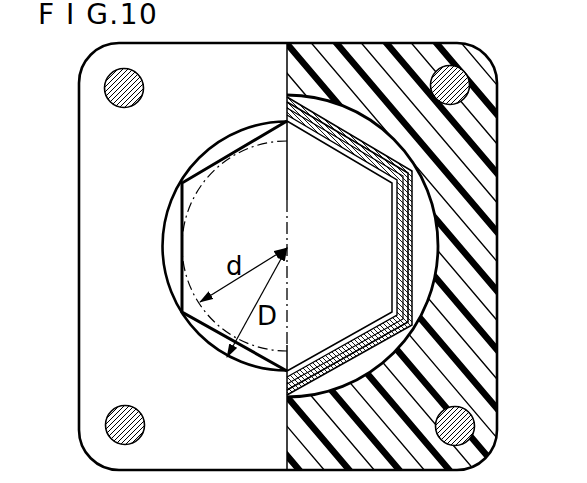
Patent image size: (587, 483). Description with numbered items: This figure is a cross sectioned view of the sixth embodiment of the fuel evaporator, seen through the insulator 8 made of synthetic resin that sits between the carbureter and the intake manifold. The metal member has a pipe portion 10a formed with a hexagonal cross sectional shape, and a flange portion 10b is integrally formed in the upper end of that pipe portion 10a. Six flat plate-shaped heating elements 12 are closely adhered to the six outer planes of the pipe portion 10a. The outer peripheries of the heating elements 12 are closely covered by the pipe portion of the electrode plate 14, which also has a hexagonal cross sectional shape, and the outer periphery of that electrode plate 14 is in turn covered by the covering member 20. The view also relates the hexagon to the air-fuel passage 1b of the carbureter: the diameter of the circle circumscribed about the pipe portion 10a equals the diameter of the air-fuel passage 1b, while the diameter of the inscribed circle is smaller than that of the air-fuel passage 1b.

The insulator 8 is at (466, 68).
The air-fuel passage 1b is at (203, 158).
The pipe portion 10a is at (337, 152).
The flange portion 10b is at (163, 250).
The heating element 12 is at (377, 163).
The electrode plate 14 is at (412, 262).
The covering member 20 is at (412, 210).